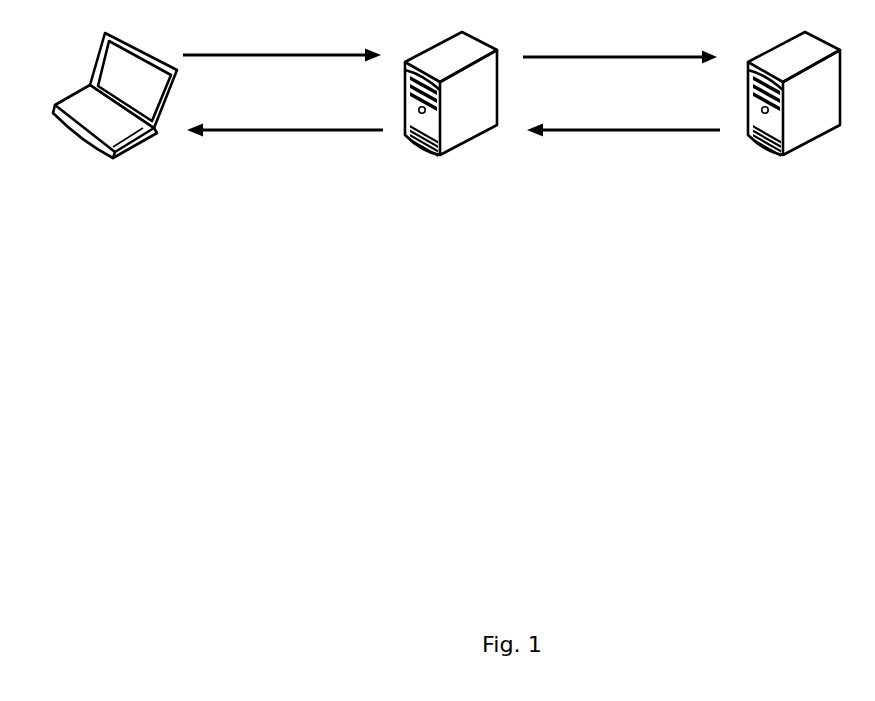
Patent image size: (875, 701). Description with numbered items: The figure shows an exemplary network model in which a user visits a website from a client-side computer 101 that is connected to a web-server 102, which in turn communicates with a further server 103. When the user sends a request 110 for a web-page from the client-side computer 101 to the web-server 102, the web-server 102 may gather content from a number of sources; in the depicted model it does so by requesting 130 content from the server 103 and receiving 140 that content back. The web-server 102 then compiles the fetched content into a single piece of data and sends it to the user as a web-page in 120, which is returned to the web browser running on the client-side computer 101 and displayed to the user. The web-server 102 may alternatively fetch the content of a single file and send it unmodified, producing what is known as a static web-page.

The client-side computer 101 is at (115, 121).
The web-server 102 is at (451, 122).
The server 103 is at (794, 122).
The request 110 is at (282, 40).
The web-page response 120 is at (285, 155).
The content request 130 is at (620, 41).
The content receipt 140 is at (623, 154).